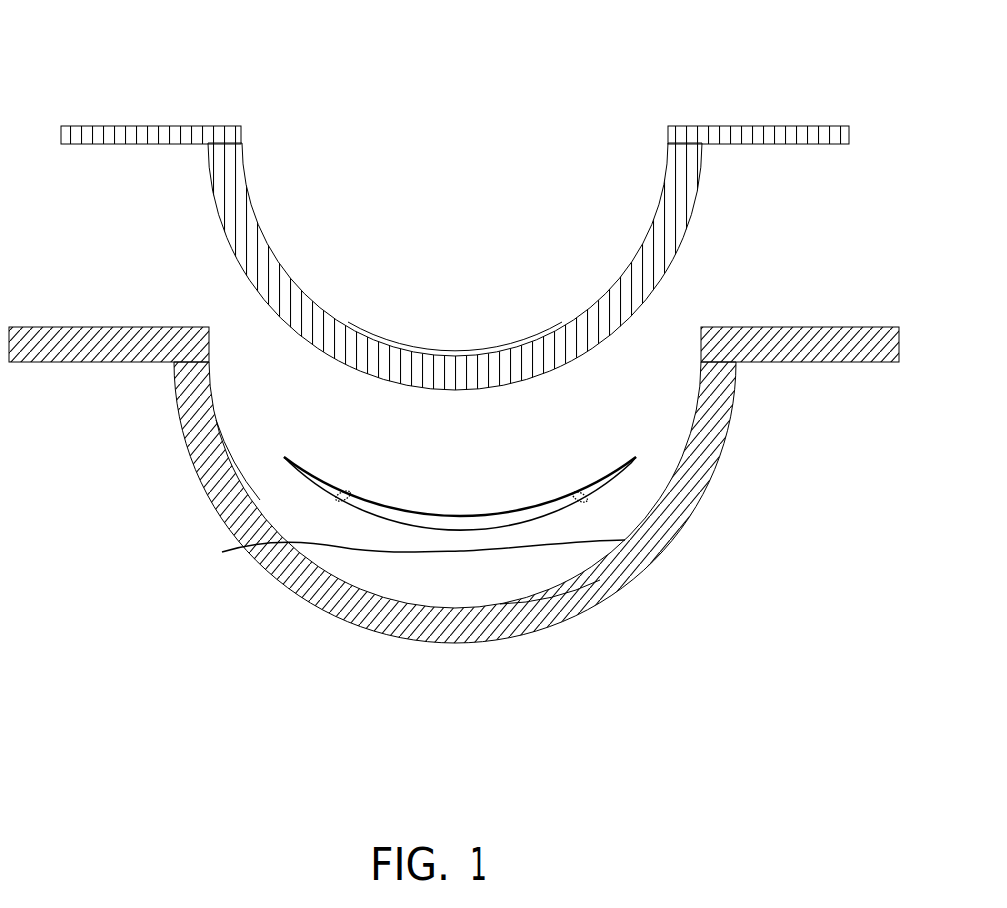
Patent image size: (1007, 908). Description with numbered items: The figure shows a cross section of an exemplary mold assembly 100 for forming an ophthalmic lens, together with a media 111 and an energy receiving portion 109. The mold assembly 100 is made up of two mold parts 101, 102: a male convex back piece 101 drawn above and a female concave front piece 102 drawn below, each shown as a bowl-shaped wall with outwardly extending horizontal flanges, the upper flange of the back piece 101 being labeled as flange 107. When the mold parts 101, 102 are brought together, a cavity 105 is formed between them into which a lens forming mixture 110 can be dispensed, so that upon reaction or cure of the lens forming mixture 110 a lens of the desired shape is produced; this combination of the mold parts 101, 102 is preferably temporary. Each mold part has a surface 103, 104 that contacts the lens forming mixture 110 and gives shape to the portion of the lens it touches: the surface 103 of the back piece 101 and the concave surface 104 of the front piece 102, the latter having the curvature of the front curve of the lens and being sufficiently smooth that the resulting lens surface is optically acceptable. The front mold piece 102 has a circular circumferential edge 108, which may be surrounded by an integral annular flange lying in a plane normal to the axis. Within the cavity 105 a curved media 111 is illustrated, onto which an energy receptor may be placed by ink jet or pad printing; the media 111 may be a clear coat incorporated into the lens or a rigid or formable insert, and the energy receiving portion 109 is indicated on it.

The mold assembly 100 is at (388, 142).
The male convex piece (back piece) 101 is at (526, 344).
The female concave piece (front piece) 102 is at (303, 580).
The surface of mold part 103 is at (452, 378).
The concave surface 104 is at (546, 606).
The cavity 105 is at (256, 431).
The upper flange 107 is at (728, 124).
The circular circumferential edge 108 is at (797, 363).
The energy receiving portion 109 is at (343, 497).
The lens forming mixture 110 is at (455, 568).
The media 111 is at (502, 513).